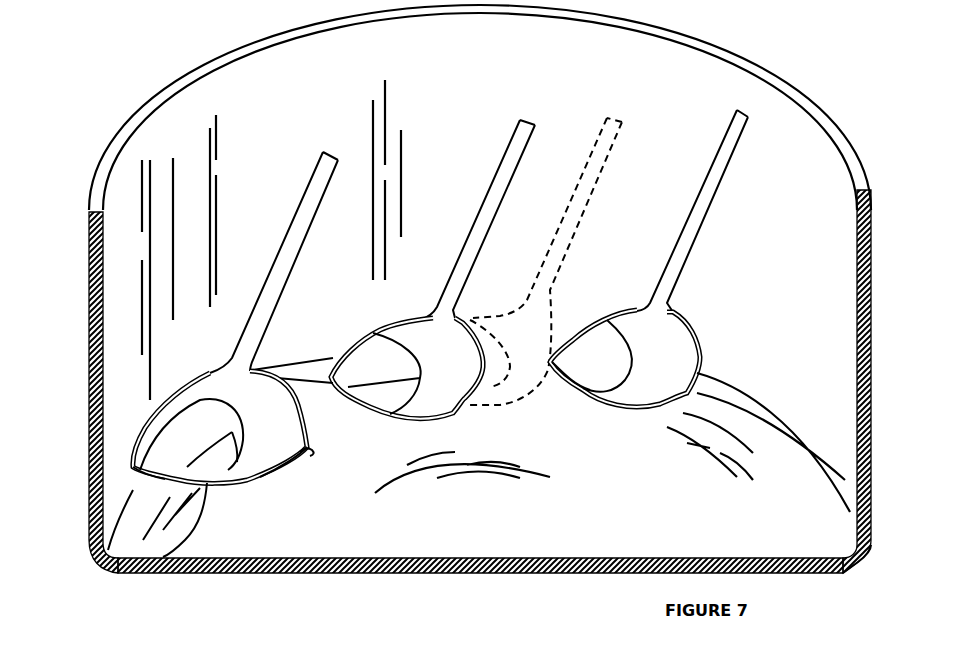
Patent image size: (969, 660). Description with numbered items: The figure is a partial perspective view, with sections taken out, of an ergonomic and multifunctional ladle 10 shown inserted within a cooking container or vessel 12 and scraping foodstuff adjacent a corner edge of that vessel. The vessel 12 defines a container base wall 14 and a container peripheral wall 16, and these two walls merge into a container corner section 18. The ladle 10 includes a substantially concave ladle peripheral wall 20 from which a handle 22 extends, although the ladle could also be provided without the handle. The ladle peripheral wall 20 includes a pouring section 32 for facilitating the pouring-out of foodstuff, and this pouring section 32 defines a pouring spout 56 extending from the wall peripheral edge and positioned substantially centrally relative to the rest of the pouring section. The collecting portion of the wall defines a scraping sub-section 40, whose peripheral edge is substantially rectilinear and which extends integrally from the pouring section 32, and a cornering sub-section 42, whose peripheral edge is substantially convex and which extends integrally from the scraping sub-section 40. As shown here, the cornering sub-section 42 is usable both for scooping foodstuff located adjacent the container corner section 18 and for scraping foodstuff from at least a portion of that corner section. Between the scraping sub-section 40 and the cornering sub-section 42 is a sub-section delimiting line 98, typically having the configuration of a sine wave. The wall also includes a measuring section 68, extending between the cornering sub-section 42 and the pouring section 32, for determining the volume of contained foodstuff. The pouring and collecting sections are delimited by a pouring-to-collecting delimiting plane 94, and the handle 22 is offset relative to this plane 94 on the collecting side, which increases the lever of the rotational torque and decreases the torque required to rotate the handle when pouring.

The ladle 10 is at (270, 213).
The cooking container or vessel 12 is at (757, 62).
The container base wall 14 is at (427, 573).
The container peripheral wall 16 is at (866, 366).
The container corner section 18 is at (848, 556).
The ladle peripheral wall 20 is at (205, 373).
The handle 22 is at (310, 207).
The pouring section 32 is at (283, 448).
The scraping sub-section 40 is at (220, 462).
The cornering sub-section 42 is at (153, 460).
The pouring spout 56 is at (308, 450).
The measuring section 68 is at (210, 402).
The pouring-to-collecting delimiting plane 94 is at (235, 462).
The sub-section delimiting line 98 is at (165, 556).